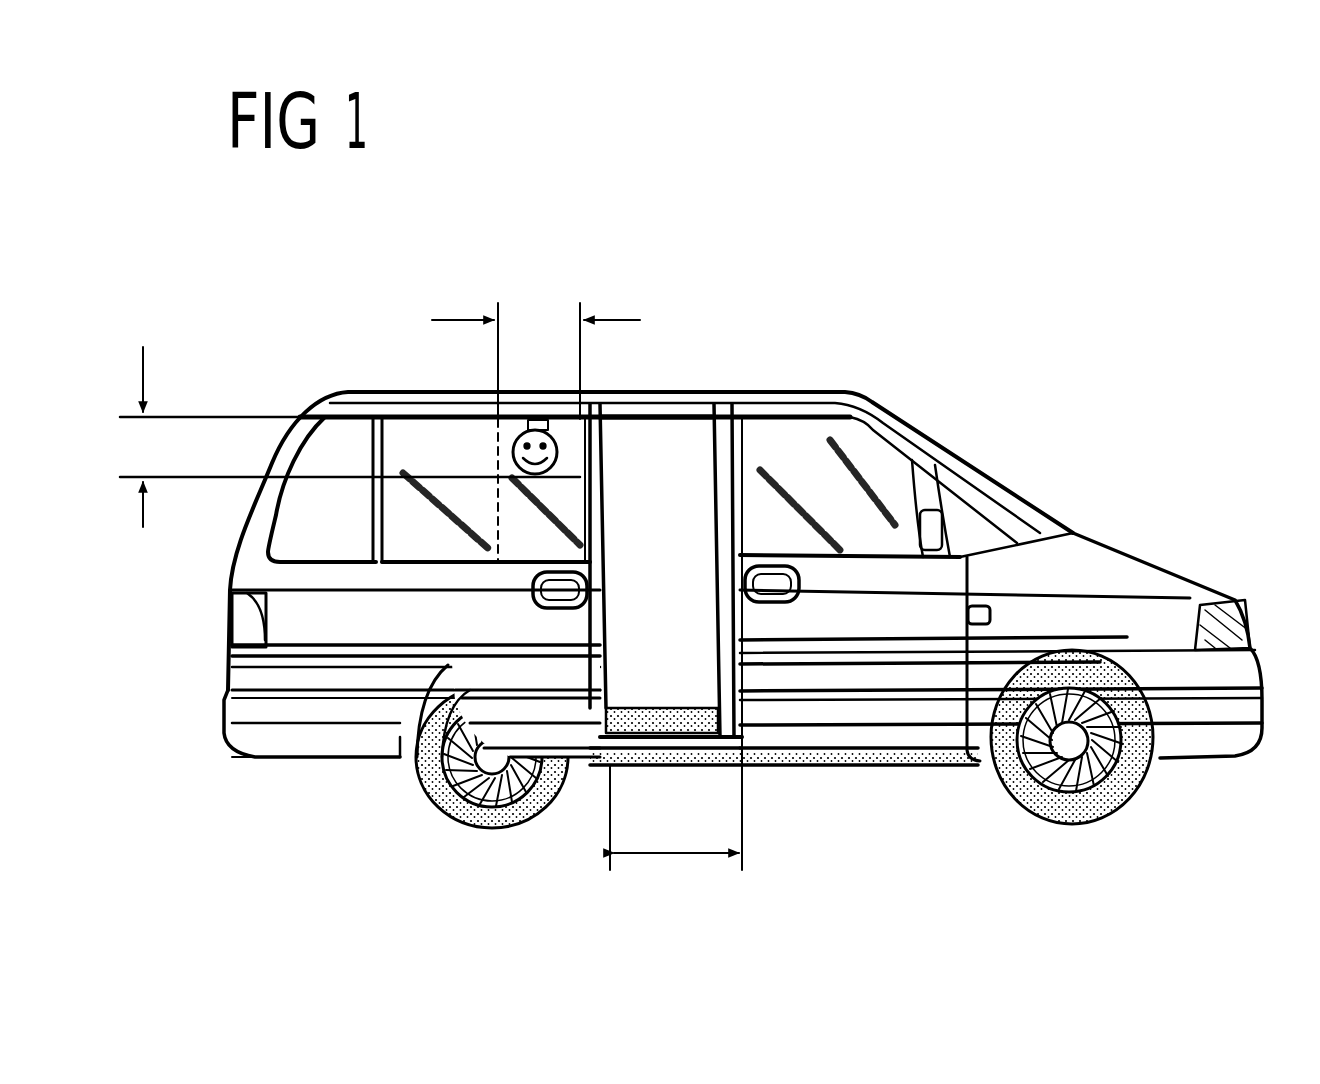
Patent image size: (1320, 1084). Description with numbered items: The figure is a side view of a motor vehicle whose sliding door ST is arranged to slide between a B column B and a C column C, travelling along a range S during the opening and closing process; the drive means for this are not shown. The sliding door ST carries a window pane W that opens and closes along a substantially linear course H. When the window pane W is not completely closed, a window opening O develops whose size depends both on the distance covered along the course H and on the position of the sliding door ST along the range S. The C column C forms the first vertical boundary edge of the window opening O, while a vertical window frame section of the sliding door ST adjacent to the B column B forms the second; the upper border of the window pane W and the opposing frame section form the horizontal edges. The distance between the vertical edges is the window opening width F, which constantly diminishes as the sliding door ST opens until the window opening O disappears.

The course H is at (340, 437).
The C column C is at (493, 463).
The window opening width F is at (536, 410).
The window opening O is at (570, 440).
The B column B is at (728, 463).
The window pane W is at (400, 542).
The sliding door ST is at (477, 662).
The range S is at (674, 817).